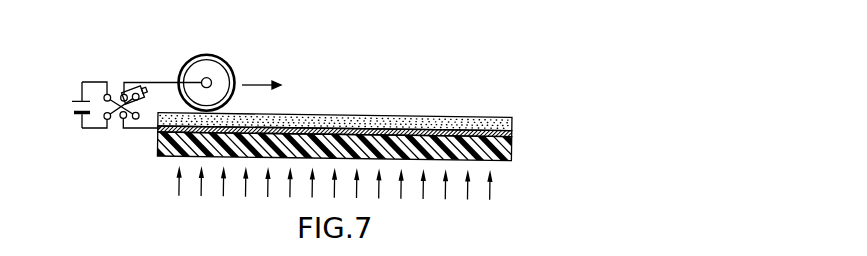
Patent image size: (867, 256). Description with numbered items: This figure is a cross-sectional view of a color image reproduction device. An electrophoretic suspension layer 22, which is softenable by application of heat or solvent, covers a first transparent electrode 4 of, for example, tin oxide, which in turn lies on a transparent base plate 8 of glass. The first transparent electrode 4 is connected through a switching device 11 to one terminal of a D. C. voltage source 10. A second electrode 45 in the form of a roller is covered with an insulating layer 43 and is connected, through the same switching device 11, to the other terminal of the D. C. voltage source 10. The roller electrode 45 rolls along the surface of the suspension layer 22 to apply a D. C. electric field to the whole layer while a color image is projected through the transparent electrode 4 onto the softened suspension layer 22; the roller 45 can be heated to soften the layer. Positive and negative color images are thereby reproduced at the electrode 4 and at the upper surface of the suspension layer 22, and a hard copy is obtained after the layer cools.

The D. C. voltage source 10 is at (72, 100).
The switching device 11 is at (120, 118).
The insulating layer 43 is at (228, 67).
The second electrode 45 is at (205, 66).
The electrophoretic suspension layer 22 is at (513, 121).
The first transparent electrode 4 is at (513, 135).
The transparent base plate 8 is at (513, 155).